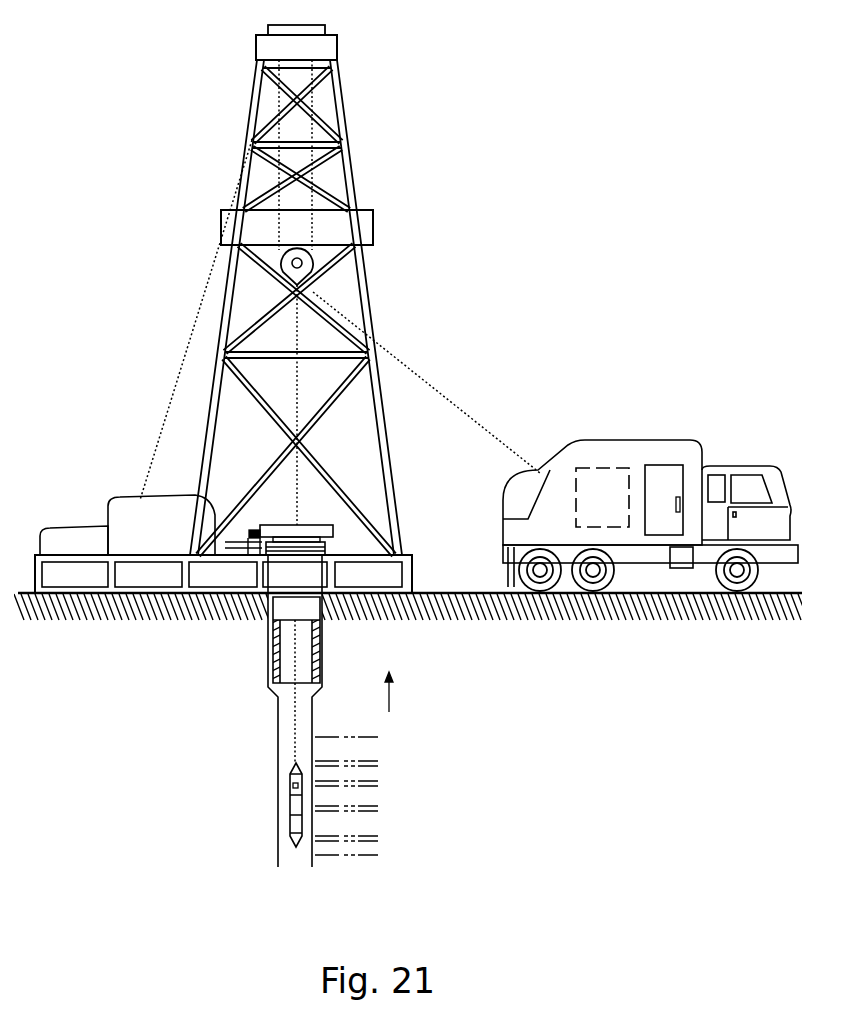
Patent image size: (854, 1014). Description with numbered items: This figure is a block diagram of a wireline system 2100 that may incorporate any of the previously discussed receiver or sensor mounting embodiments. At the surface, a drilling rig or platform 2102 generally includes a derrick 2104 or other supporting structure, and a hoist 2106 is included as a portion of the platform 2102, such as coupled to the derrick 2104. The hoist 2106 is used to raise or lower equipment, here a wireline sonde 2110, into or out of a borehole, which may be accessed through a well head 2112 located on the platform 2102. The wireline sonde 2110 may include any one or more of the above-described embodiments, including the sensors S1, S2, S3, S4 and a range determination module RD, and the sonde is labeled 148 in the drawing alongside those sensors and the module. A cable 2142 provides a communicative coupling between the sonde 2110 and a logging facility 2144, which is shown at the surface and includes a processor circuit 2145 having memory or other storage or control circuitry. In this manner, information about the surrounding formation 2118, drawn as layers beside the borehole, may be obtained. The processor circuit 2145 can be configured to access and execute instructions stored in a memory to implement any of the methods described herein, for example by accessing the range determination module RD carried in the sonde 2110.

The wireline system 2100 is at (133, 123).
The platform 2102 is at (412, 577).
The derrick 2104 is at (395, 523).
The hoist 2106 is at (313, 263).
The wireline sonde 2110 is at (290, 797).
The well head 2112 is at (313, 523).
The formation 2118 is at (382, 736).
The cable 2142 is at (428, 383).
The logging facility 2144 is at (660, 465).
The processor circuit 2145 is at (588, 468).
The sensors 148 is at (290, 785).